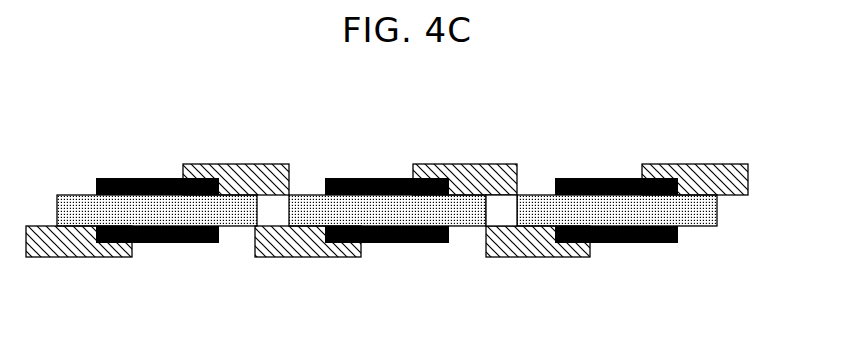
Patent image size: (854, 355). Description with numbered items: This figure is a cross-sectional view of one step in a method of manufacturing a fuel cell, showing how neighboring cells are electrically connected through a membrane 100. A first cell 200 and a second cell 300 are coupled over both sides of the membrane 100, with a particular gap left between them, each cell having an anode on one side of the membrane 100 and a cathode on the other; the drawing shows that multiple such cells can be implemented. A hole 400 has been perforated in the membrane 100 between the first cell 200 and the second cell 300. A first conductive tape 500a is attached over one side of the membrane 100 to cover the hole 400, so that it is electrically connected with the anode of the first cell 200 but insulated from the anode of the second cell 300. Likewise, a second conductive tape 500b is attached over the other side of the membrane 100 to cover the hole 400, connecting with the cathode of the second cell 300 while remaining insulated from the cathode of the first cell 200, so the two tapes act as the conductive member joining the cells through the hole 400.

The membrane 100 is at (705, 212).
The first cell 200 is at (164, 171).
The second cell 300 is at (398, 172).
The hole 400 is at (513, 209).
The first conductive tape 500a is at (263, 177).
The second conductive tape 500b is at (312, 243).